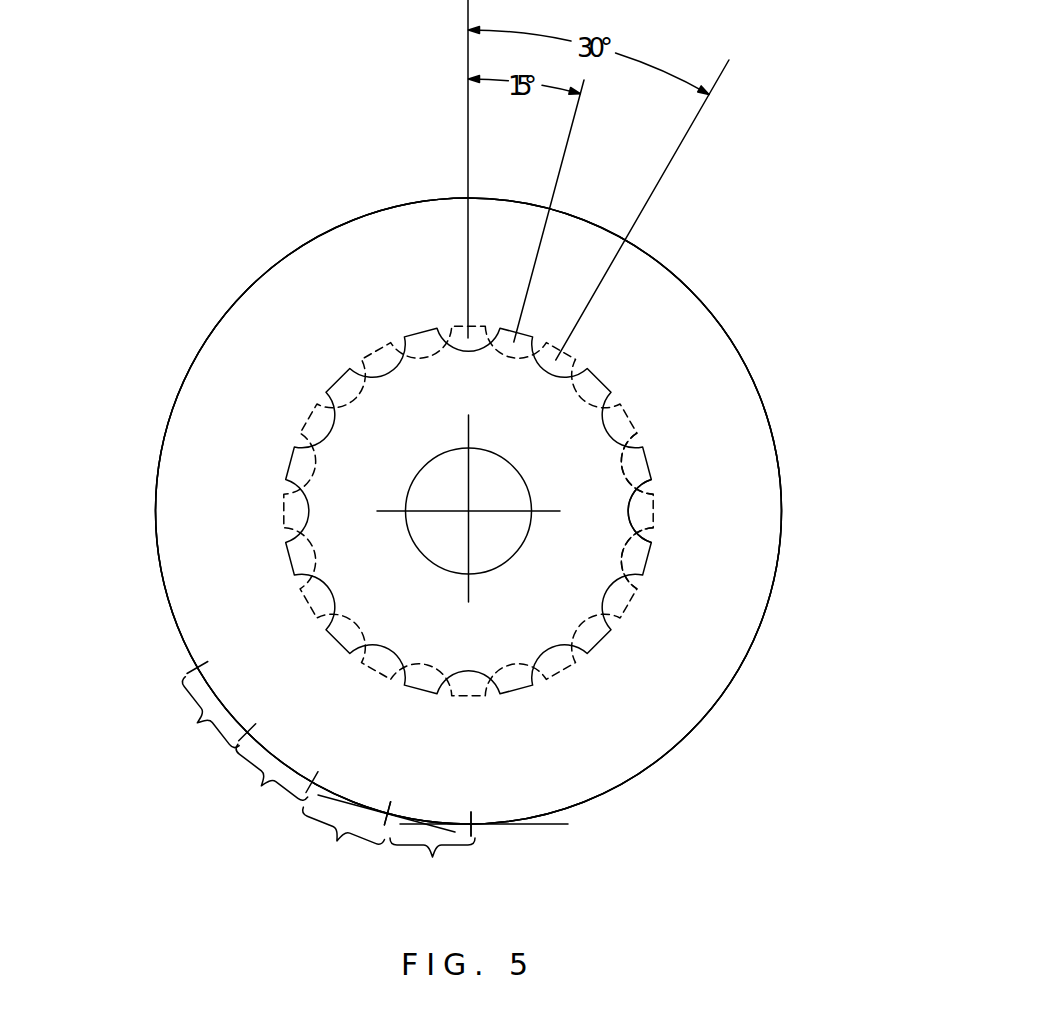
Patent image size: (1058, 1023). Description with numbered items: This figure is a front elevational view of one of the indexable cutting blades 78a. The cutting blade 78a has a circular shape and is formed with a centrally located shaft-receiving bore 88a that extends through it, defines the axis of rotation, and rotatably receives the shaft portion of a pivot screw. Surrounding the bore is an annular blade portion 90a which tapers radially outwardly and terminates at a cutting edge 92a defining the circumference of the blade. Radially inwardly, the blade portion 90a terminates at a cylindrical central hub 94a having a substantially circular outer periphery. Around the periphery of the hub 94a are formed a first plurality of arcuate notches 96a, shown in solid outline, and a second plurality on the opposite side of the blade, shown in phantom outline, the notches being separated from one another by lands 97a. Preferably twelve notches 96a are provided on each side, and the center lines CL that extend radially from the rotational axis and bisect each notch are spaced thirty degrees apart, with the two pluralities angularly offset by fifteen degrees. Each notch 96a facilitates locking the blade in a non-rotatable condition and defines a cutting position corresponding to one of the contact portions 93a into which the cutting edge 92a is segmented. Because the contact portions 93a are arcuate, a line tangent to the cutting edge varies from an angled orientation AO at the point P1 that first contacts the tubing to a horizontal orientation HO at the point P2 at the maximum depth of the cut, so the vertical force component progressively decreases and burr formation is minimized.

The cutting edge 92a is at (668, 268).
The cutting blade 78a is at (688, 295).
The lands 97a is at (600, 380).
The arcuate notches 96a is at (650, 437).
The annular blade portion 90a is at (762, 483).
The shaft-receiving bore 88a is at (513, 550).
The cylindrical central hub 94a is at (600, 565).
The contact portions 93a is at (191, 726).
The center lines CL is at (467, 58).
The point of first contact P1 is at (391, 812).
The point of maximum cut depth P2 is at (473, 822).
The angled orientation AO is at (334, 808).
The horizontal orientation HO is at (538, 826).